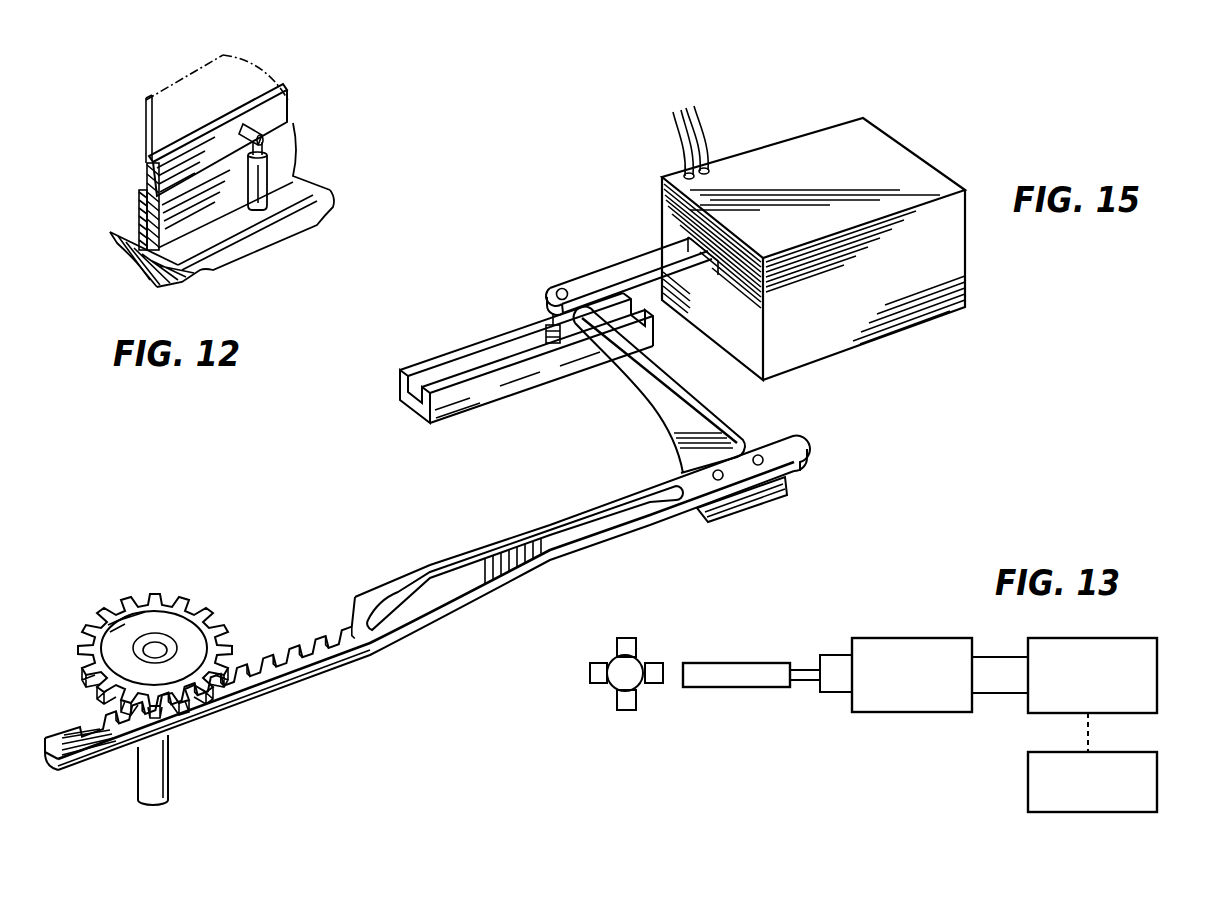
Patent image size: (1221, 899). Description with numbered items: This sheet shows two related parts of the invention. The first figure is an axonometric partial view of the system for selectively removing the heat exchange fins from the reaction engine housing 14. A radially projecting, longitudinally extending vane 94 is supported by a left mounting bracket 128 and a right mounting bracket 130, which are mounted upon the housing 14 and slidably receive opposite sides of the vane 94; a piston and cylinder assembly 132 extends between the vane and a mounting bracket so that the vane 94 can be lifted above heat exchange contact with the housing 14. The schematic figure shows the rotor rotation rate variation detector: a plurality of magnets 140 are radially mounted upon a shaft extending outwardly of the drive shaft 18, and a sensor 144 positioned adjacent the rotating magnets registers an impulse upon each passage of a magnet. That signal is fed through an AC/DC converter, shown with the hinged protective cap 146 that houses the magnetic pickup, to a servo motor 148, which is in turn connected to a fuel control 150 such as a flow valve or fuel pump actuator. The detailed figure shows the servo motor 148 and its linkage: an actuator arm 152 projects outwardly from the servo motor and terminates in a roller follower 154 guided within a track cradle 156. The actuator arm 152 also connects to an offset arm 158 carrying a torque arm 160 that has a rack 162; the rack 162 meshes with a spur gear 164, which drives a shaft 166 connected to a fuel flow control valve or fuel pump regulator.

In FIG. 12, the housing 14 is at (320, 205).
In FIG. 12, the vane 94 is at (286, 91).
In FIG. 12, the left mounting bracket 128 is at (128, 226).
In FIG. 12, the right mounting bracket 130 is at (209, 271).
In FIG. 12, the piston and cylinder assembly 132 is at (266, 160).
In FIG. 13, the drive shaft 18 is at (610, 686).
In FIG. 13, the magnets 140 is at (601, 661).
In FIG. 13, the sensor 144 is at (743, 663).
In FIG. 13, the hinged protective cap 146 is at (890, 638).
In FIG. 15, the servo motor 148 is at (803, 236).
In FIG. 13, the servo motor 148 is at (1132, 638).
In FIG. 13, the fuel control 150 is at (1158, 782).
In FIG. 15, the actuator arm 152 is at (591, 283).
In FIG. 15, the roller follower 154 is at (547, 331).
In FIG. 15, the track cradle 156 is at (513, 392).
In FIG. 15, the offset arm 158 is at (713, 413).
In FIG. 15, the torque arm 160 is at (602, 542).
In FIG. 15, the rack 162 is at (270, 660).
In FIG. 15, the spur gear 164 is at (181, 598).
In FIG. 15, the shaft 166 is at (172, 774).